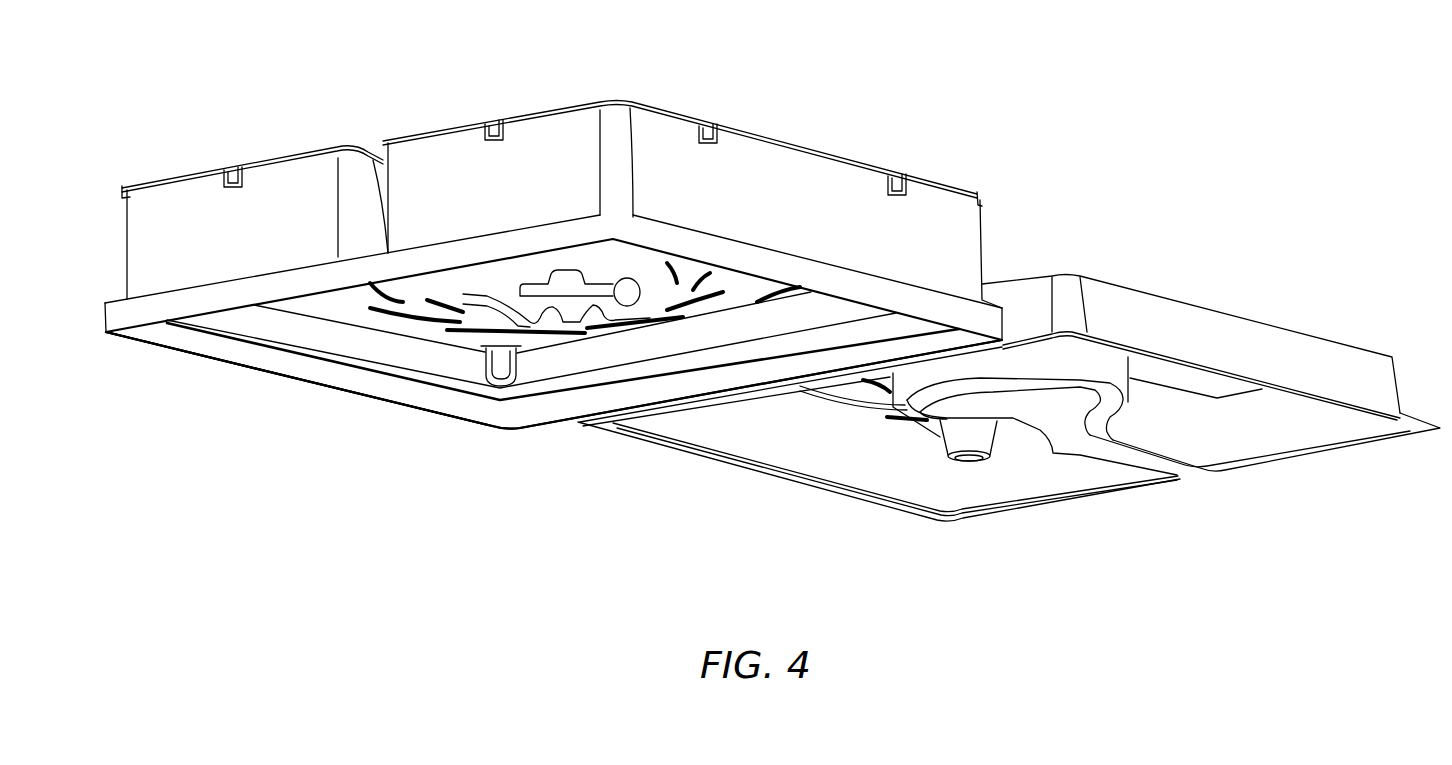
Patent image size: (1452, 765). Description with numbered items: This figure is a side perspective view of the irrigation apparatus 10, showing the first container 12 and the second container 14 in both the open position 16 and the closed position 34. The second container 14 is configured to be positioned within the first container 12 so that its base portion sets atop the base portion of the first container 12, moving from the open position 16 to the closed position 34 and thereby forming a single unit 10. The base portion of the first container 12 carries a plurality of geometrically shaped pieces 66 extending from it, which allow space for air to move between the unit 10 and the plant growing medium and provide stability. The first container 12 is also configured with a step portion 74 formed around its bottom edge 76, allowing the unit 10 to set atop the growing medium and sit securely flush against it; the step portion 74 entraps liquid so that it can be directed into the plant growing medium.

The irrigation apparatus 10 is at (1120, 113).
The first container 12 is at (153, 265).
The second container 14 is at (1388, 388).
The open position 16 is at (540, 462).
The closed position 34 is at (297, 134).
The geometrically shaped pieces 66 is at (503, 367).
The step portion 74 is at (170, 303).
The bottom edge 76 is at (325, 393).